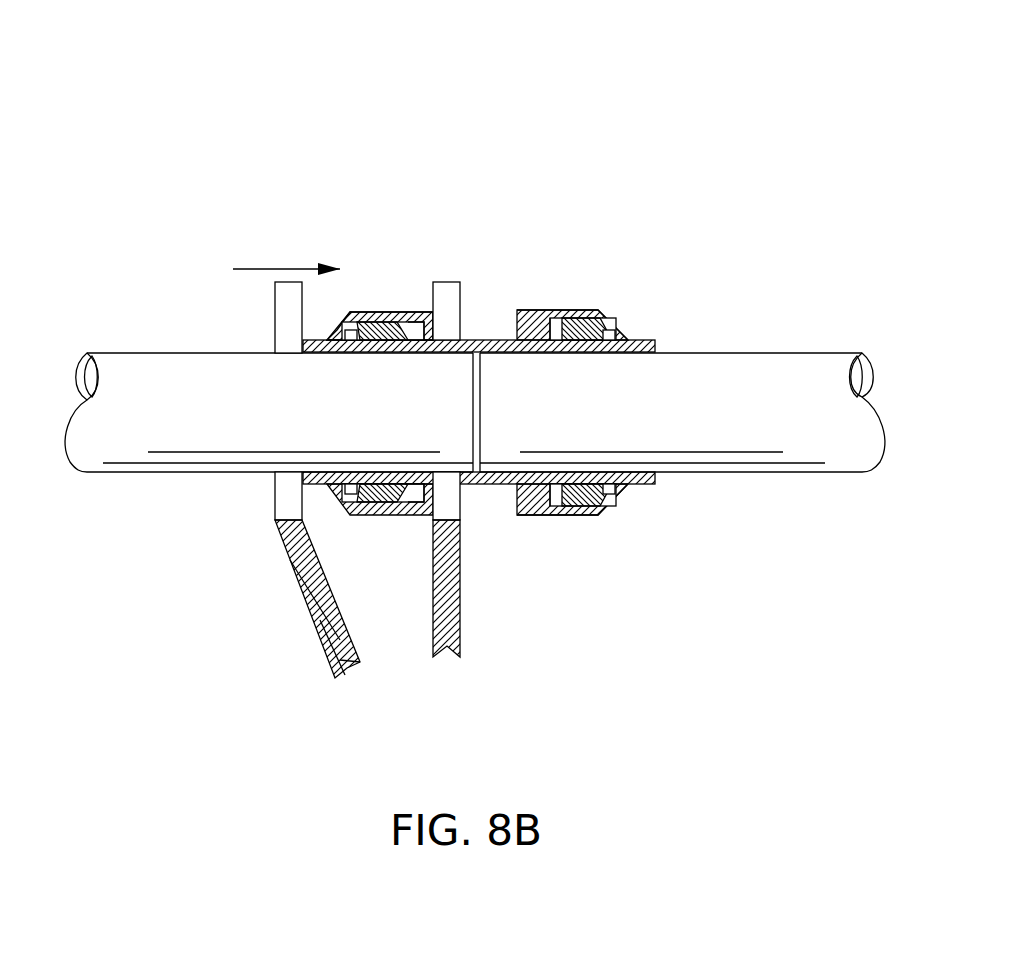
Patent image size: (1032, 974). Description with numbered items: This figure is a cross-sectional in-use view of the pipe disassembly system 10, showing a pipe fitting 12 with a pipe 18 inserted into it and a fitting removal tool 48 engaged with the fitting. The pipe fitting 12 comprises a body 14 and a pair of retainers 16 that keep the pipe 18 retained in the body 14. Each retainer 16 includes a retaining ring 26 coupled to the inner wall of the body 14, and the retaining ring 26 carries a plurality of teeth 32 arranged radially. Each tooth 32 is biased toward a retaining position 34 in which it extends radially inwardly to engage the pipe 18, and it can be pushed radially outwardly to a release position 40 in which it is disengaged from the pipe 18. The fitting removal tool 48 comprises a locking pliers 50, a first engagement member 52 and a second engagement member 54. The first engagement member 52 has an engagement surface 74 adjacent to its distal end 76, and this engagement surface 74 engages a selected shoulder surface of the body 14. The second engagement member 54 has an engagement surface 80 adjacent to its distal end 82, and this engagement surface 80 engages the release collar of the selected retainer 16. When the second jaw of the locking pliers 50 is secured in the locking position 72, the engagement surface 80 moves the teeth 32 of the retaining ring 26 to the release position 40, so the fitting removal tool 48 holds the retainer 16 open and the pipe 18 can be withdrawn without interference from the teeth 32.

The pipe disassembly system 10 is at (533, 130).
The pipe fitting 12 is at (620, 277).
The body 14 is at (541, 310).
The retainer 16 is at (350, 300).
The pipe 18 is at (143, 460).
The retaining ring 26 is at (390, 298).
The tooth 32 is at (360, 350).
The retaining position 34 is at (638, 510).
The release position 40 is at (358, 527).
The fitting removal tool 48 is at (220, 662).
The locking pliers 50 is at (302, 707).
The first engagement member 52 is at (462, 583).
The second engagement member 54 is at (297, 600).
The locking position 72 is at (241, 588).
The engagement surface 74 is at (430, 300).
The distal end 76 is at (447, 282).
The engagement surface 80 is at (305, 335).
The distal end 82 is at (285, 282).